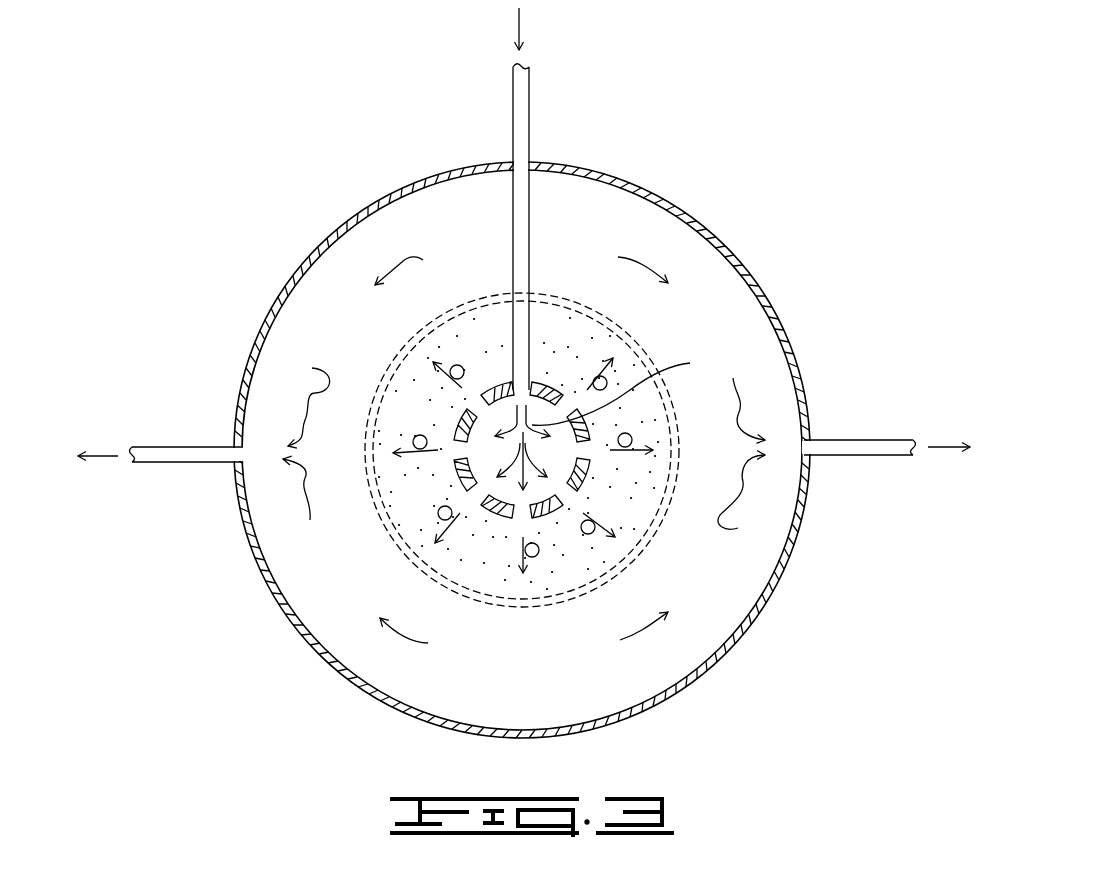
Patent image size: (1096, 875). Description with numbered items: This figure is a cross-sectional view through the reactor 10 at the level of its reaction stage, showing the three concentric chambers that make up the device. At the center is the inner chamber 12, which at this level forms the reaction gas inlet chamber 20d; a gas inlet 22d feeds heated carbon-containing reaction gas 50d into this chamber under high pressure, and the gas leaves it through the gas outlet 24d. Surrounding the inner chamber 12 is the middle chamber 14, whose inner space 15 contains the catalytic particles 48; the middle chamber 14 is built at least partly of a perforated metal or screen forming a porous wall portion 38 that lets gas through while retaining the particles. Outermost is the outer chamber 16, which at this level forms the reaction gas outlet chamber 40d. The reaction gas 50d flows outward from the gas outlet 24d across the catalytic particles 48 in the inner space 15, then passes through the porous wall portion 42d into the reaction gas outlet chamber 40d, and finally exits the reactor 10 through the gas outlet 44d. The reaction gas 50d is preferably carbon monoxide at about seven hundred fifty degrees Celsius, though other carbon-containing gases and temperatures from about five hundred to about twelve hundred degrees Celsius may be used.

The reactor 10 is at (767, 155).
The inner chamber 12 is at (590, 477).
The middle chamber 14 is at (647, 350).
The inner space 15 is at (480, 323).
The outer chamber 16 is at (758, 282).
The reaction gas inlet chamber 20d is at (490, 462).
The gas inlet 22d is at (512, 95).
The gas outlet 24d is at (486, 402).
The porous wall portion 38 is at (628, 328).
The reaction gas outlet chamber 40d is at (437, 225).
The porous wall portion 42d is at (525, 604).
The gas outlet 44d is at (182, 440).
The catalytic particles 48 is at (577, 332).
The heated carbon-containing reaction gas 50d is at (519, 22).